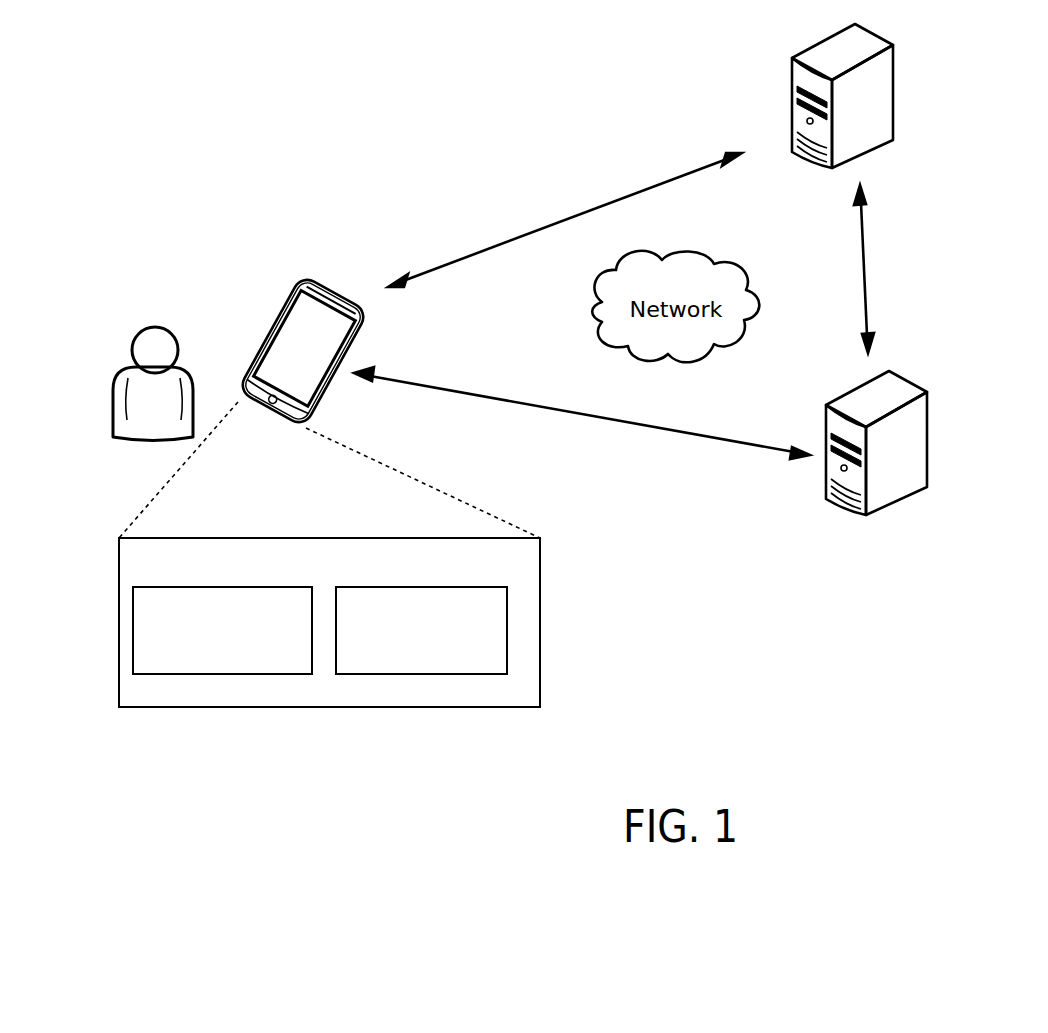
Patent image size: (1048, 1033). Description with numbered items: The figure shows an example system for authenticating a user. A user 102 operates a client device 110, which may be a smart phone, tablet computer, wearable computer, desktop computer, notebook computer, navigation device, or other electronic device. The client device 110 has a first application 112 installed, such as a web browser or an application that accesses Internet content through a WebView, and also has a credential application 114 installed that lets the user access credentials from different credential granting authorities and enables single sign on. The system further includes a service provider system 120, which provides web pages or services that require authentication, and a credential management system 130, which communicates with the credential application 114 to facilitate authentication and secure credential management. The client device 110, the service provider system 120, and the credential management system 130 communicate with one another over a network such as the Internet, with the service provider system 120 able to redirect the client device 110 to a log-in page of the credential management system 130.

The user 102 is at (136, 333).
The client device 110 is at (290, 303).
The first application 112 is at (222, 630).
The credential application 114 is at (421, 630).
The service provider system 120 is at (893, 91).
The credential management system 130 is at (927, 437).